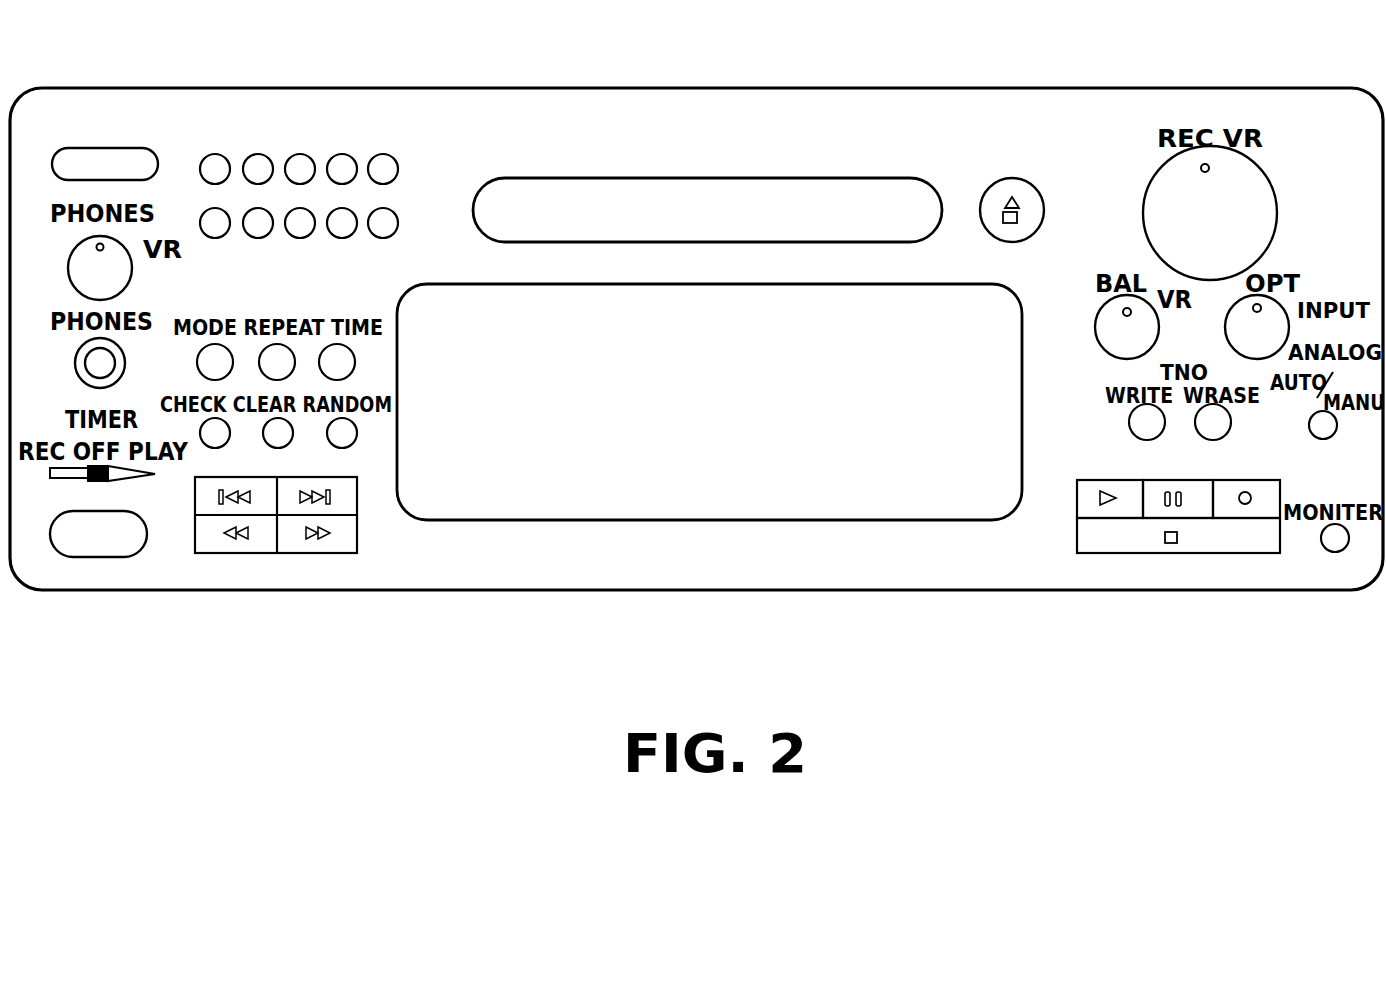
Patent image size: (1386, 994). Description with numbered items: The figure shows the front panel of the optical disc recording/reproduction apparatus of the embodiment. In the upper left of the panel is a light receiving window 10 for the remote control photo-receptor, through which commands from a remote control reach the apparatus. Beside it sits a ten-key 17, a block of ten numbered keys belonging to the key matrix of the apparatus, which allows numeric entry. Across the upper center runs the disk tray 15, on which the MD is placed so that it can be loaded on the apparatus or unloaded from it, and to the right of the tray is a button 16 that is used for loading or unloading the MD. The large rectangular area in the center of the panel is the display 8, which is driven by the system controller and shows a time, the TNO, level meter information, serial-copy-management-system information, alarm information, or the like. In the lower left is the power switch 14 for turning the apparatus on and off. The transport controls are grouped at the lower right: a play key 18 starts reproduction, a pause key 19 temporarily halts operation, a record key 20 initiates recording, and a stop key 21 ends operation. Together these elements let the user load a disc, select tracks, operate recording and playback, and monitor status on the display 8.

The display 8 is at (835, 520).
The light receiving window 10 is at (90, 150).
The power switch 14 is at (107, 558).
The disk tray 15 is at (842, 178).
The button 16 is at (1013, 180).
The ten-key 17 is at (410, 146).
The play key 18 is at (1078, 502).
The pause key 19 is at (1203, 503).
The record key 20 is at (1267, 505).
The stop key 21 is at (1145, 535).